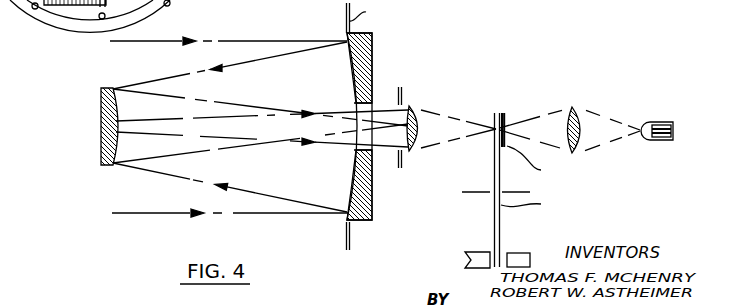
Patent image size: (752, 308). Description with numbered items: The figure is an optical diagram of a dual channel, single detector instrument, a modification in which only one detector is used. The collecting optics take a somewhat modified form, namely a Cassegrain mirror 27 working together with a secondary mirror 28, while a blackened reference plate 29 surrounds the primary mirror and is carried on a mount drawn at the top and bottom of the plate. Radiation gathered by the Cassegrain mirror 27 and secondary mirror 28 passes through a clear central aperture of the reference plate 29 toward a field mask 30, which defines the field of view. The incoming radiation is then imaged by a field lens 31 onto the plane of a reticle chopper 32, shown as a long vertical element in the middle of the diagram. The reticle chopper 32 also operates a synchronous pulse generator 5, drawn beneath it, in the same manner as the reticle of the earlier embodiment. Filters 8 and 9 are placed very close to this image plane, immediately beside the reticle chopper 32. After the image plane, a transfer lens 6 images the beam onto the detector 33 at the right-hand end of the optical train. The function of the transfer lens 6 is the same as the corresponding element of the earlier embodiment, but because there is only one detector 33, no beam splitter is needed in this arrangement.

The synchronous pulse generator 5 is at (512, 253).
The transfer lens 6 is at (578, 108).
The filter 8 is at (505, 115).
The filter 9 is at (504, 146).
The Cassegrain mirror 27 is at (355, 68).
The secondary mirror 28 is at (101, 105).
The blackened reference plate 29 is at (346, 12).
The field mask 30 is at (402, 90).
The field lens 31 is at (419, 150).
The reticle chopper 32 is at (494, 157).
The detector 33 is at (653, 122).